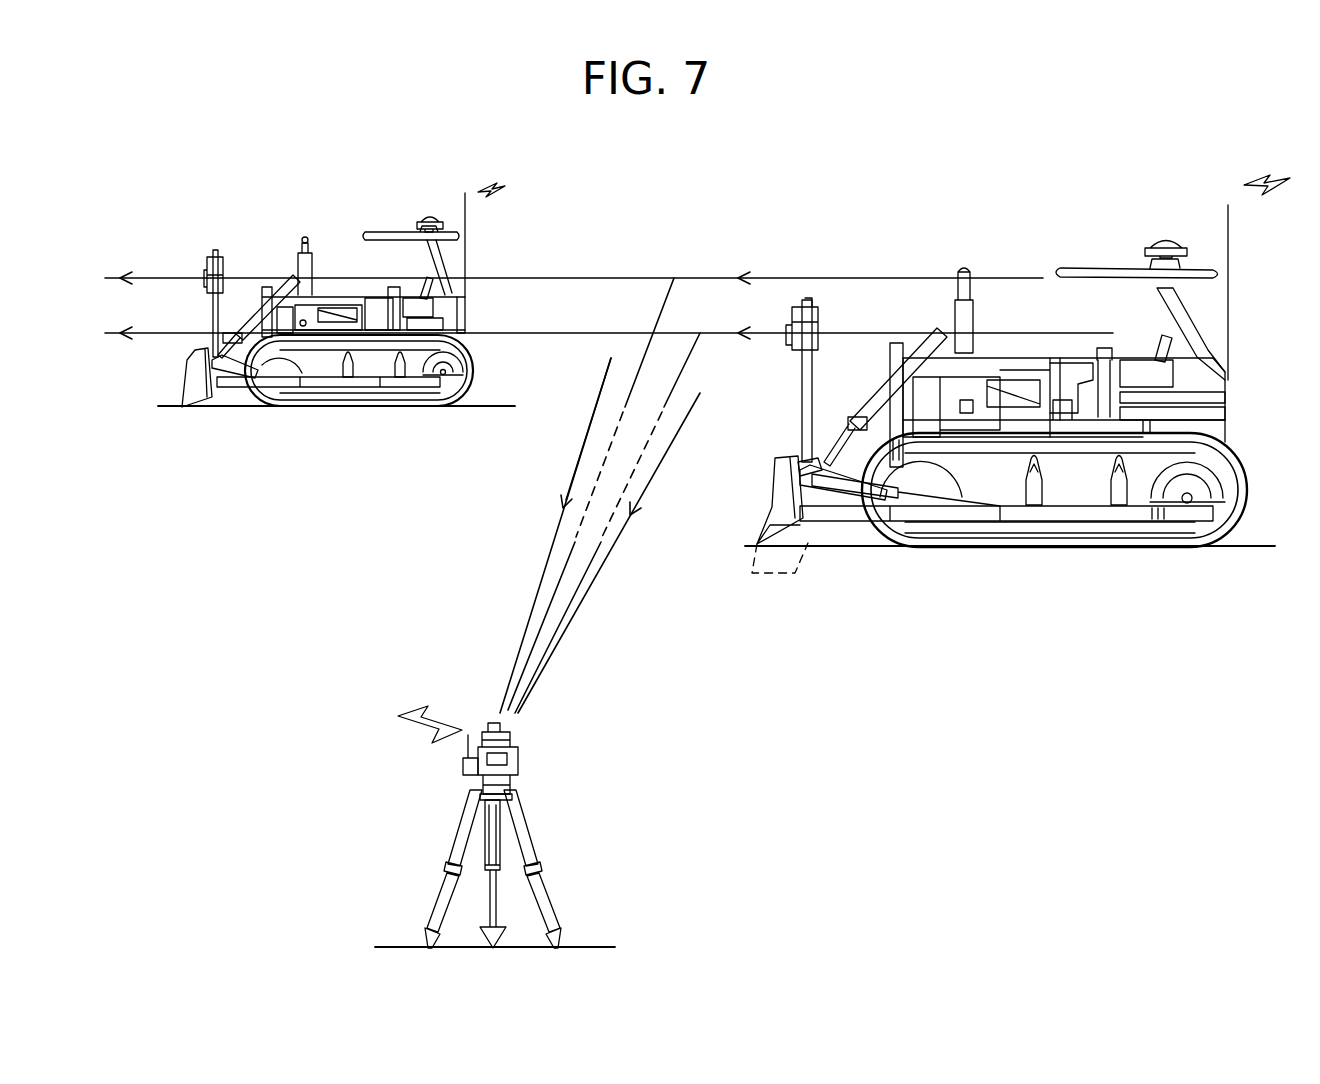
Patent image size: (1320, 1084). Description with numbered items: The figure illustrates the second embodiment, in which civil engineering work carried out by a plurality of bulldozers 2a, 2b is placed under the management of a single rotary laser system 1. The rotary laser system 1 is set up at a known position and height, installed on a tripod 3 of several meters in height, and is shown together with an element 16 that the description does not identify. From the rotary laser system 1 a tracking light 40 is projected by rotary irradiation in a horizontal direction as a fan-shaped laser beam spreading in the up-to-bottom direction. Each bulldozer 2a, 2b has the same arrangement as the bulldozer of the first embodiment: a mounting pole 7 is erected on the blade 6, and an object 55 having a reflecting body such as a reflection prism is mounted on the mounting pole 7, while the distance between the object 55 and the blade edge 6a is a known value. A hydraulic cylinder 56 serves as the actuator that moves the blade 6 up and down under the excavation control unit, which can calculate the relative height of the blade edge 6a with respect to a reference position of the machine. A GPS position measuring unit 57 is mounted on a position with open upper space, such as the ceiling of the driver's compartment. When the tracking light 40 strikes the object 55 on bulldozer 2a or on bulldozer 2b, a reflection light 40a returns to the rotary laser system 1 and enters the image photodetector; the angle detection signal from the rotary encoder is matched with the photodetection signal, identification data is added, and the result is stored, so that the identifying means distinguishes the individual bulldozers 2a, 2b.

The rotary laser system 1 is at (520, 758).
The tripod 3 is at (532, 837).
The radio communication unit 16 is at (463, 767).
The tracking light 40 is at (912, 277).
The reflection light 40a is at (549, 560).
The bulldozer 2a is at (1042, 312).
The bulldozer 2b is at (342, 238).
The blade 6 is at (195, 364).
The blade edge 6a is at (762, 560).
The mounting pole 7 is at (800, 395).
The object 55 is at (210, 258).
The hydraulic cylinder 56 is at (244, 326).
The GPS position measuring unit 57 is at (428, 221).